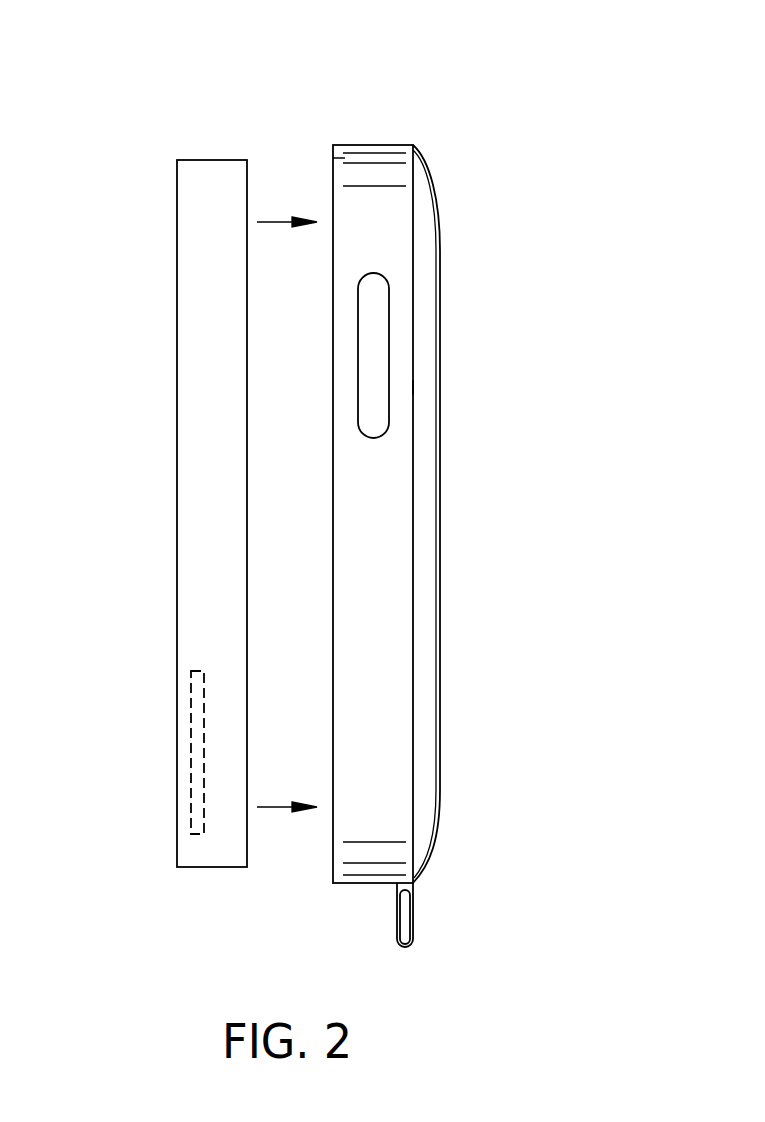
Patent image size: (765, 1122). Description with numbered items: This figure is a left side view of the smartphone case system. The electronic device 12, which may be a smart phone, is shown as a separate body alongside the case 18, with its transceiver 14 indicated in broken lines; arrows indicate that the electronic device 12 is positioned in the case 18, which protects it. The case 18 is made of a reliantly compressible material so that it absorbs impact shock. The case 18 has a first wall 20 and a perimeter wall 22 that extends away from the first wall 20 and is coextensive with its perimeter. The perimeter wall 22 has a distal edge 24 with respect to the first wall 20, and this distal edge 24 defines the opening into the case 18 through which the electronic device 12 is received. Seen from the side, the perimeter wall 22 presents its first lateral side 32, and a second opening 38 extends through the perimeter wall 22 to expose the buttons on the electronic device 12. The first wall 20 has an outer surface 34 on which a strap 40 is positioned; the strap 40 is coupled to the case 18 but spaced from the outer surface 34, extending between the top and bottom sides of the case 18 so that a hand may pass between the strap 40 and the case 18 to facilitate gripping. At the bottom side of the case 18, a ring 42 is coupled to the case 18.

The electronic device 12 is at (177, 220).
The transceiver 14 is at (192, 722).
The case 18 is at (392, 144).
The first wall 20 is at (415, 387).
The perimeter wall 22 is at (367, 158).
The distal edge 24 is at (333, 158).
The first lateral side 32 is at (396, 625).
The outer surface 34 is at (415, 248).
The second opening 38 is at (370, 347).
The strap 40 is at (440, 545).
The ring 42 is at (405, 948).